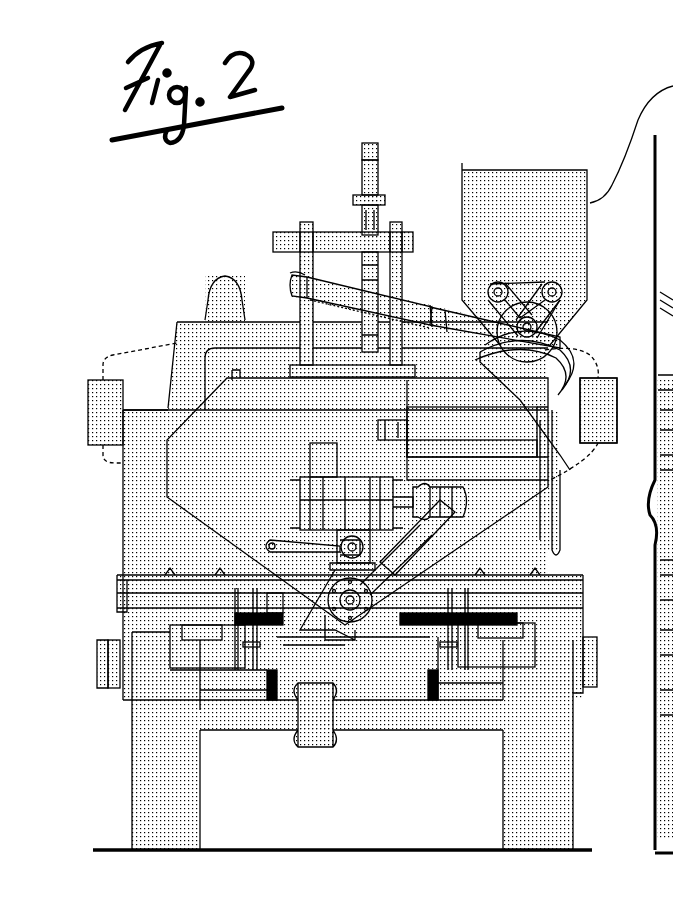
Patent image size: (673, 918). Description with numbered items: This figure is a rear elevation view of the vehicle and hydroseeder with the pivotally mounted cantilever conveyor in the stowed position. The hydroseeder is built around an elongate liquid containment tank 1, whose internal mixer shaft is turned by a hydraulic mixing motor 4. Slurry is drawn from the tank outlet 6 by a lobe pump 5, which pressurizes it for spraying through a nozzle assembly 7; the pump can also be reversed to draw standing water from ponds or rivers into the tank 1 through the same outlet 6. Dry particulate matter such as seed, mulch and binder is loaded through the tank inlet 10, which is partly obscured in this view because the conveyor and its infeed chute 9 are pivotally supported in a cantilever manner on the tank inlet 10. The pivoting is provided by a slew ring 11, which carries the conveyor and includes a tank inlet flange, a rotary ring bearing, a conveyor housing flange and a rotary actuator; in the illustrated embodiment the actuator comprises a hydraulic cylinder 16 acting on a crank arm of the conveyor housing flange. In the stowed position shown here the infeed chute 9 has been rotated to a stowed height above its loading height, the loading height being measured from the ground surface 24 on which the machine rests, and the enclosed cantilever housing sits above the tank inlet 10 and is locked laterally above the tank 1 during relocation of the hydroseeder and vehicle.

The liquid containment tank 1 is at (170, 410).
The hydraulic mixing motor 4 is at (273, 545).
The lobe pump 5 is at (300, 490).
The tank outlet 6 is at (355, 620).
The nozzle assembly 7 is at (367, 143).
The infeed chute 9 is at (523, 177).
The tank inlet 10 is at (552, 410).
The slew ring 11 is at (569, 358).
The hydraulic cylinder 16 is at (415, 293).
The ground surface 24 is at (108, 847).